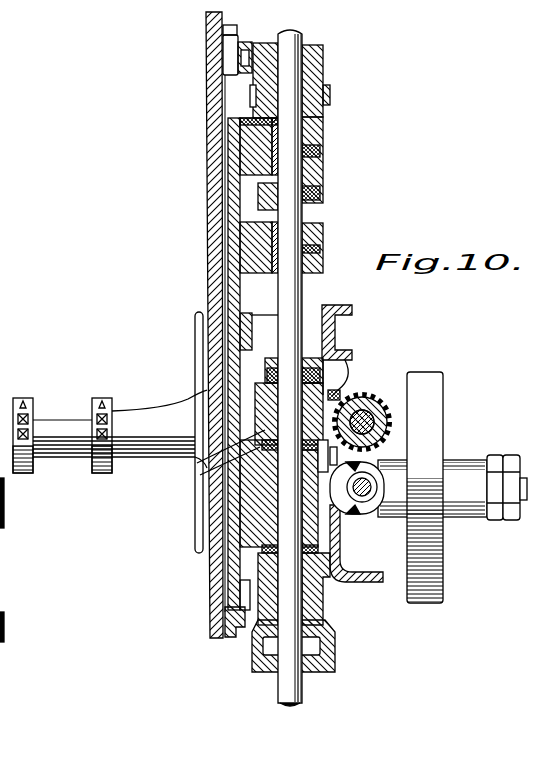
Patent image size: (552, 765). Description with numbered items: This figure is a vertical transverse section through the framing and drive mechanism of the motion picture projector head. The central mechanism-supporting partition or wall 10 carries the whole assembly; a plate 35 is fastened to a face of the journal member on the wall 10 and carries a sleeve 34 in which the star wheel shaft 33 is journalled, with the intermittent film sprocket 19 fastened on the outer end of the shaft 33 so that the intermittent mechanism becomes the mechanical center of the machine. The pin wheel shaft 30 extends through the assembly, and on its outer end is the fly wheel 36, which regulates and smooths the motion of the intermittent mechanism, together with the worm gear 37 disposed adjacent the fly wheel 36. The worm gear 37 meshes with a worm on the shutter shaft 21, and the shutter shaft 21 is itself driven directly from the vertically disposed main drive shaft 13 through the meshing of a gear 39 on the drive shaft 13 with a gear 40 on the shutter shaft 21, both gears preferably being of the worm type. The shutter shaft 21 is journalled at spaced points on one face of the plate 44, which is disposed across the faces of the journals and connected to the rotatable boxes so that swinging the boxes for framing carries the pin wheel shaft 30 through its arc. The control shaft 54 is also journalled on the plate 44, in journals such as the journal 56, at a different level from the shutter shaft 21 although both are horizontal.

The mechanism-supporting partition or wall 10 is at (213, 249).
The main drive shaft 13 is at (290, 293).
The intermittent film sprocket 19 is at (100, 398).
The shutter shaft 21 is at (374, 405).
The pin wheel shaft 30 is at (523, 507).
The shaft 33 is at (52, 425).
The sleeve 34 is at (160, 395).
The plate 35 is at (197, 344).
The fly wheel 36 is at (443, 565).
The worm gear 37 is at (368, 510).
The gear 39 is at (197, 463).
The gear 40 is at (382, 418).
The plate 44 is at (336, 337).
The control shaft 54 is at (372, 482).
The journal 56 is at (378, 497).